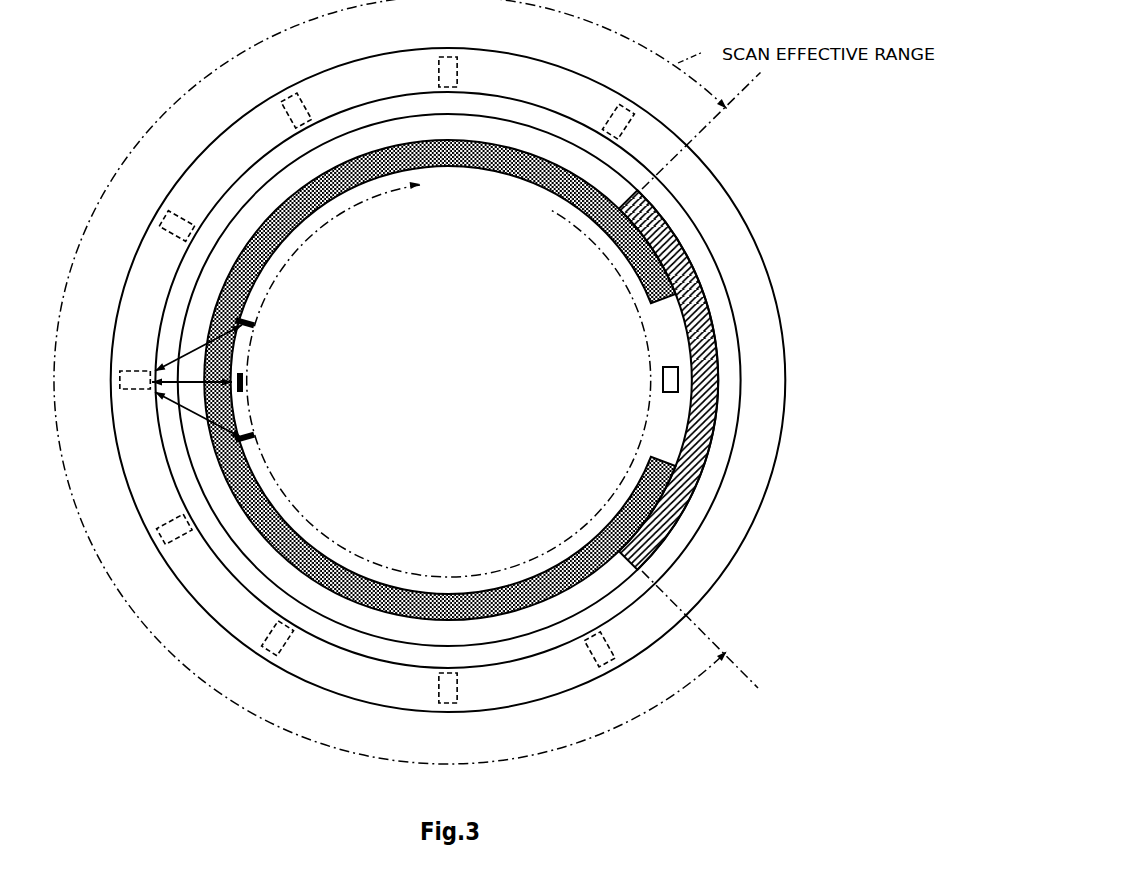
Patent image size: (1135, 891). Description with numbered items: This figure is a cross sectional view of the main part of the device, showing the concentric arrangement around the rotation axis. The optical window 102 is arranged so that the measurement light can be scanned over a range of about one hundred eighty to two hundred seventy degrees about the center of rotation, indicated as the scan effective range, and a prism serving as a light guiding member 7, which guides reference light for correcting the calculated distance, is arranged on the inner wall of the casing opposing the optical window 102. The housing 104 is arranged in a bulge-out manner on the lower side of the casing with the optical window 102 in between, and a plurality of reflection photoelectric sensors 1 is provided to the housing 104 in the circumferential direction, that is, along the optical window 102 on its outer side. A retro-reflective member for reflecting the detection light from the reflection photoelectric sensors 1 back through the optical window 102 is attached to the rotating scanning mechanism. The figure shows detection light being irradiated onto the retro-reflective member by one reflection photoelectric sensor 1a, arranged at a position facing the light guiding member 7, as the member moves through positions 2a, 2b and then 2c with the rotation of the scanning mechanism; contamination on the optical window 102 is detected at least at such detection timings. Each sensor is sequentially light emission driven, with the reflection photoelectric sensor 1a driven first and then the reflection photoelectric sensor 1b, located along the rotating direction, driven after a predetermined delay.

The reflection photoelectric sensor 1 is at (448, 55).
The reflection photoelectric sensor 1a is at (118, 381).
The reflection photoelectric sensor 1b is at (164, 220).
The position of retro-reflective member 2a is at (257, 446).
The position of retro-reflective member 2b is at (245, 382).
The position of retro-reflective member 2c is at (256, 322).
The light guiding member 7 is at (663, 381).
The optical window 102 is at (509, 122).
The housing 104 is at (728, 210).